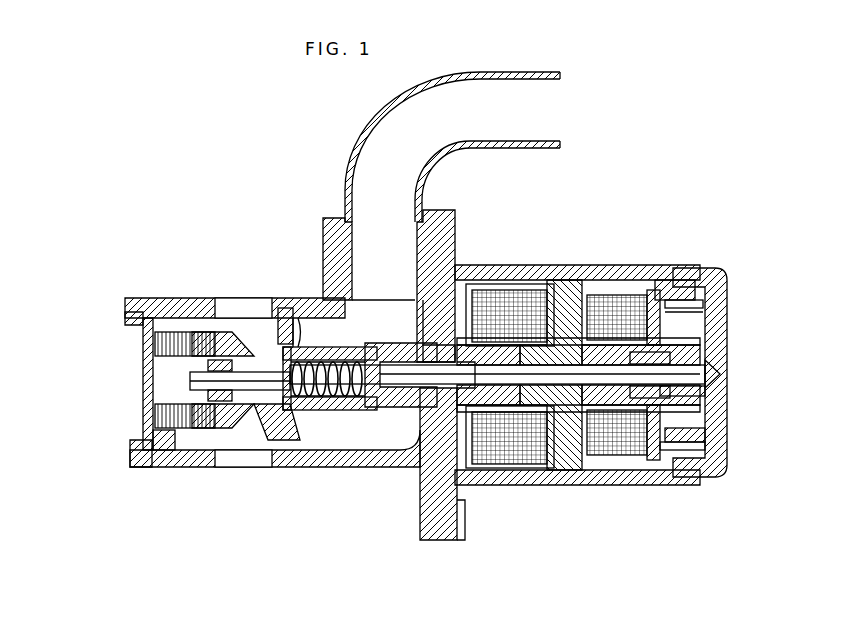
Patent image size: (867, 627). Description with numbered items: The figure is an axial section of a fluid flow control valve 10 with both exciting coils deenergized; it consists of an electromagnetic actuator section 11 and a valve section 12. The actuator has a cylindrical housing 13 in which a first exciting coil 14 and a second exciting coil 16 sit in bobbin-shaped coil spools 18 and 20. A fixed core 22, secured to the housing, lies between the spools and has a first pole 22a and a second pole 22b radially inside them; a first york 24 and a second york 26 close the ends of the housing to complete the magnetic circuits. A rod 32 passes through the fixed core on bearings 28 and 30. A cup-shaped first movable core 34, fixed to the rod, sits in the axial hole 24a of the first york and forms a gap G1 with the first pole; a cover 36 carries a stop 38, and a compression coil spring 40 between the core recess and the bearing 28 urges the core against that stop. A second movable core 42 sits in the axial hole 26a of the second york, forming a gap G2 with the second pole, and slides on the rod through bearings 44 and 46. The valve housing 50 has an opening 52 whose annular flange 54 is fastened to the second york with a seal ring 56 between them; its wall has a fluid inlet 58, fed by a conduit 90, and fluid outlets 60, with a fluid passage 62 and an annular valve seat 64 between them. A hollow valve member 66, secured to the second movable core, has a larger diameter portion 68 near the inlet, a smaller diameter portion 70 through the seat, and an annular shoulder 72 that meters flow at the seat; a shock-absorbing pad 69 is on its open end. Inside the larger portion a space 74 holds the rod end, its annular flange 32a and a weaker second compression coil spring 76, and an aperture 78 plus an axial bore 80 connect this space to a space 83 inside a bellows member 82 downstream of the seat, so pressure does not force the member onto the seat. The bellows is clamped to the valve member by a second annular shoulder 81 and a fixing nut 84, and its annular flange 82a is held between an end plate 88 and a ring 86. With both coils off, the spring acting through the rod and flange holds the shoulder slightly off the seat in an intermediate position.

The fluid flow control valve 10 is at (297, 193).
The electromagnetic actuator section 11 is at (565, 185).
The valve section 12 is at (214, 245).
The housing 13 is at (558, 265).
The first exciting coil 14 is at (616, 348).
The second exciting coil 16 is at (498, 330).
The first coil spool 18 is at (590, 335).
The second coil spool 20 is at (472, 298).
The fixed core 22 is at (560, 478).
The first pole 22a is at (615, 471).
The second pole 22b is at (546, 478).
The first york 24 is at (672, 478).
The axial hole 24a is at (712, 350).
The second york 26 is at (440, 540).
The axial hole 26a is at (426, 506).
The bearing 28 is at (650, 294).
The bearing 30 is at (518, 347).
The rod 32 is at (508, 445).
The annular flange 32a is at (356, 422).
The first movable core 34 is at (712, 392).
The cover 36 is at (724, 430).
The stop 38 is at (720, 374).
The compression coil spring 40 is at (712, 446).
The second movable core 42 is at (418, 428).
The bearing 44 is at (465, 445).
The bearing 46 is at (376, 422).
The valve housing 50 is at (299, 338).
The opening 52 is at (396, 305).
The annular flange 54 is at (438, 222).
The seal ring 56 is at (460, 490).
The fluid inlet 58 is at (378, 300).
The fluid outlets 60 is at (222, 303).
The fluid passage 62 is at (331, 337).
The annular valve seat 64 is at (305, 440).
The valve member 66 is at (332, 414).
The larger diameter portion 68 is at (402, 356).
The shock-absorbing pad 69 is at (405, 466).
The smaller diameter portion 70 is at (236, 346).
The annular shoulder 72 is at (250, 360).
The space 74 is at (268, 436).
The second compression coil spring 76 is at (298, 450).
The aperture 78 is at (298, 352).
The axial bore 80 is at (190, 379).
The second annular shoulder 81 is at (232, 463).
The bellows member 82 is at (188, 333).
The annular flange 82a is at (127, 317).
The space 83 is at (153, 356).
The fixing nut 84 is at (198, 440).
The ring 86 is at (158, 456).
The end plate 88 is at (148, 400).
The conduit 90 is at (374, 132).
The gap G1 is at (647, 472).
The gap G2 is at (533, 472).